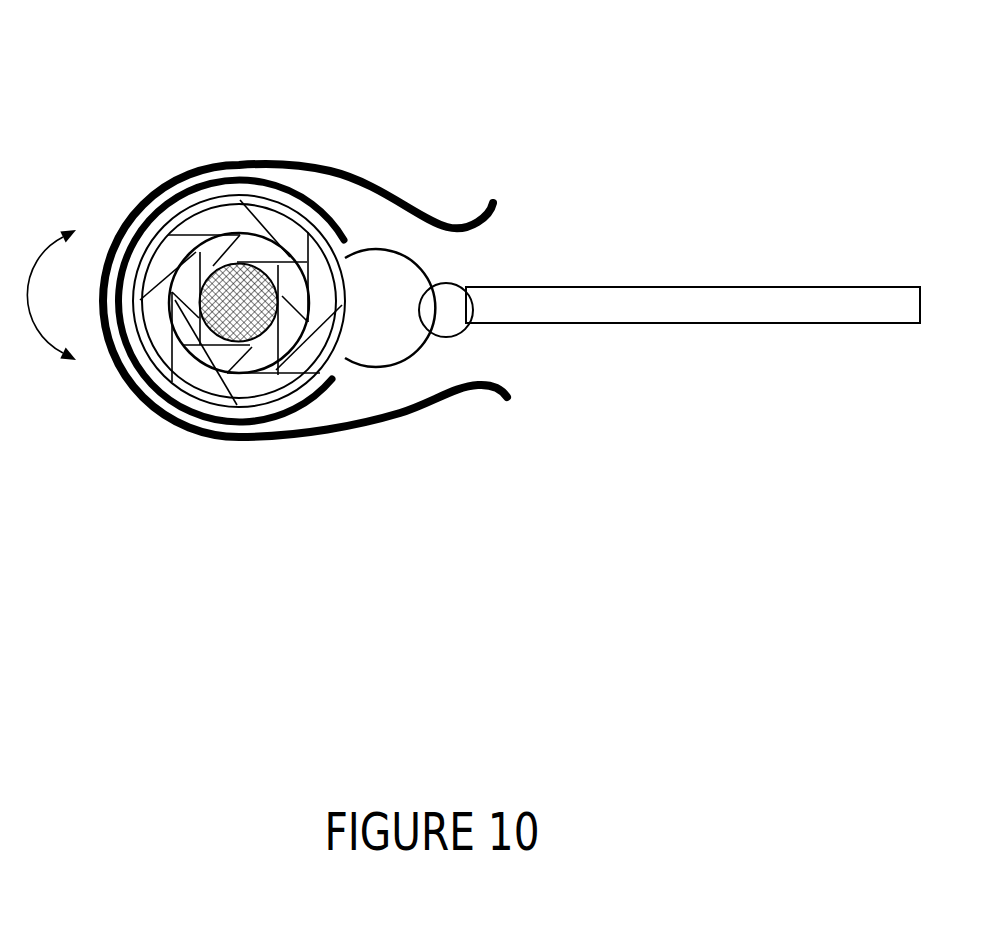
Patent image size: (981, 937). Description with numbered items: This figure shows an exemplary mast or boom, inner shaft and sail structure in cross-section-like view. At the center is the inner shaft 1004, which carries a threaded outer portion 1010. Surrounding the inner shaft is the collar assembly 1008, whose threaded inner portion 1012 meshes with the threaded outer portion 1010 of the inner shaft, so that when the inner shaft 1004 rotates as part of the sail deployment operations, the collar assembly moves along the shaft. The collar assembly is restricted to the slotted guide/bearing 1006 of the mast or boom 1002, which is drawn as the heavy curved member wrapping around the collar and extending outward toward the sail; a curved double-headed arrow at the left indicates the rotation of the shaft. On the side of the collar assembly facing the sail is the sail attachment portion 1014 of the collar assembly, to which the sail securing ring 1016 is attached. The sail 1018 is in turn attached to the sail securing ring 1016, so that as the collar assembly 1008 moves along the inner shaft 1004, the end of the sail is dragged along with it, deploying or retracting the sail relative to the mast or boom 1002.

The mast or boom 1002 is at (245, 160).
The inner shaft 1004 is at (245, 305).
The slotted guide/bearing 1006 is at (170, 410).
The collar assembly 1008 is at (312, 407).
The threaded outer portion 1010 is at (284, 330).
The threaded inner portion 1012 is at (290, 375).
The sail attachment portion 1014 is at (423, 347).
The sail securing ring 1016 is at (443, 282).
The sail 1018 is at (682, 287).